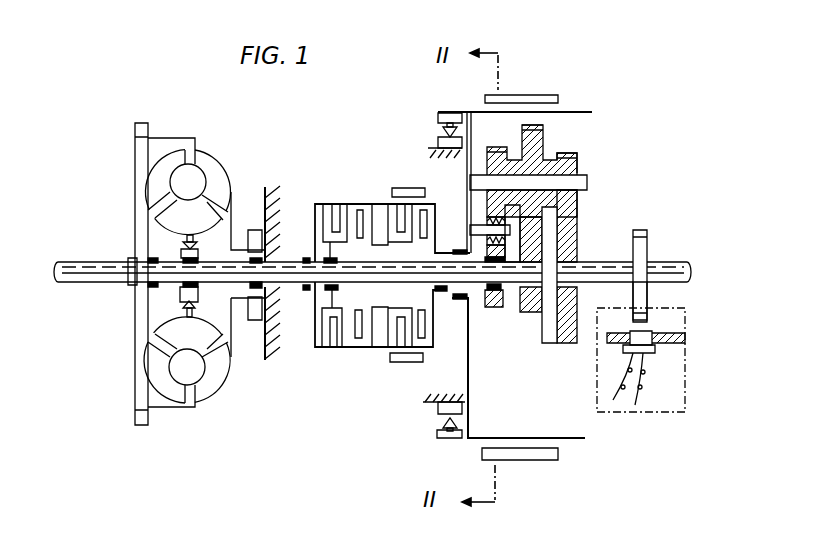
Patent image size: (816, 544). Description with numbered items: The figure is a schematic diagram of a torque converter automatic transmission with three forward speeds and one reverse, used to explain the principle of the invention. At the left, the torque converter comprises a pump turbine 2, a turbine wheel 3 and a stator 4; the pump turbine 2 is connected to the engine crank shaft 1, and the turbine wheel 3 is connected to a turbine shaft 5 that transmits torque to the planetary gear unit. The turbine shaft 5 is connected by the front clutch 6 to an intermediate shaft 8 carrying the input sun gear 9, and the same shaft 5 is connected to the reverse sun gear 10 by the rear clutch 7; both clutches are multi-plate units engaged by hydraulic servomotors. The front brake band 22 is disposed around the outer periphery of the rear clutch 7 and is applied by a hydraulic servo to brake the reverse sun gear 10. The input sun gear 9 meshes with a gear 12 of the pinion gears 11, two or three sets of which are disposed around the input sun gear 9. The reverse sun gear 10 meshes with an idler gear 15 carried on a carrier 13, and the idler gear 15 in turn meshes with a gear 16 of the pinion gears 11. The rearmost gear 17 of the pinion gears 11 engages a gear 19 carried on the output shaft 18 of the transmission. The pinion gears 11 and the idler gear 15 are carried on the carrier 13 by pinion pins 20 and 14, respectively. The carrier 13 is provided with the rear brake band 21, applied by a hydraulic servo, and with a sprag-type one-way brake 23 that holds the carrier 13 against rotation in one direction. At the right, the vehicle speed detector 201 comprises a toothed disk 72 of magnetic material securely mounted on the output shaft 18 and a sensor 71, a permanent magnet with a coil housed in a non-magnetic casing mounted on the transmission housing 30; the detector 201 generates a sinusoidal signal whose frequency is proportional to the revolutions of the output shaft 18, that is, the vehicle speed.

The engine crank shaft 1 is at (100, 283).
The pump turbine 2 is at (208, 157).
The turbine wheel 3 is at (158, 180).
The stator 4 is at (173, 224).
The turbine shaft 5 is at (293, 285).
The front clutch 6 is at (337, 343).
The rear clutch 7 is at (388, 344).
The intermediate shaft 8 is at (453, 284).
The input sun gear 9 is at (532, 313).
The reverse sun gear 10 is at (492, 308).
The pinion gears 11 is at (546, 152).
The gear 12 is at (524, 129).
The carrier 13 is at (466, 169).
The pinion pin 14 is at (470, 229).
The idler gear 15 is at (480, 215).
The gear 16 is at (497, 147).
The rearmost gear 17 is at (578, 160).
The output shaft 18 is at (668, 270).
The gear 19 is at (578, 232).
The pinion pin 20 is at (588, 180).
The rear brake band 21 is at (536, 94).
The front brake band 22 is at (393, 191).
The one-way brake 23 is at (438, 142).
The transmission housing 30 is at (686, 338).
The sensor 71 is at (628, 341).
The toothed disk 72 is at (647, 296).
The vehicle speed detector 201 is at (643, 413).